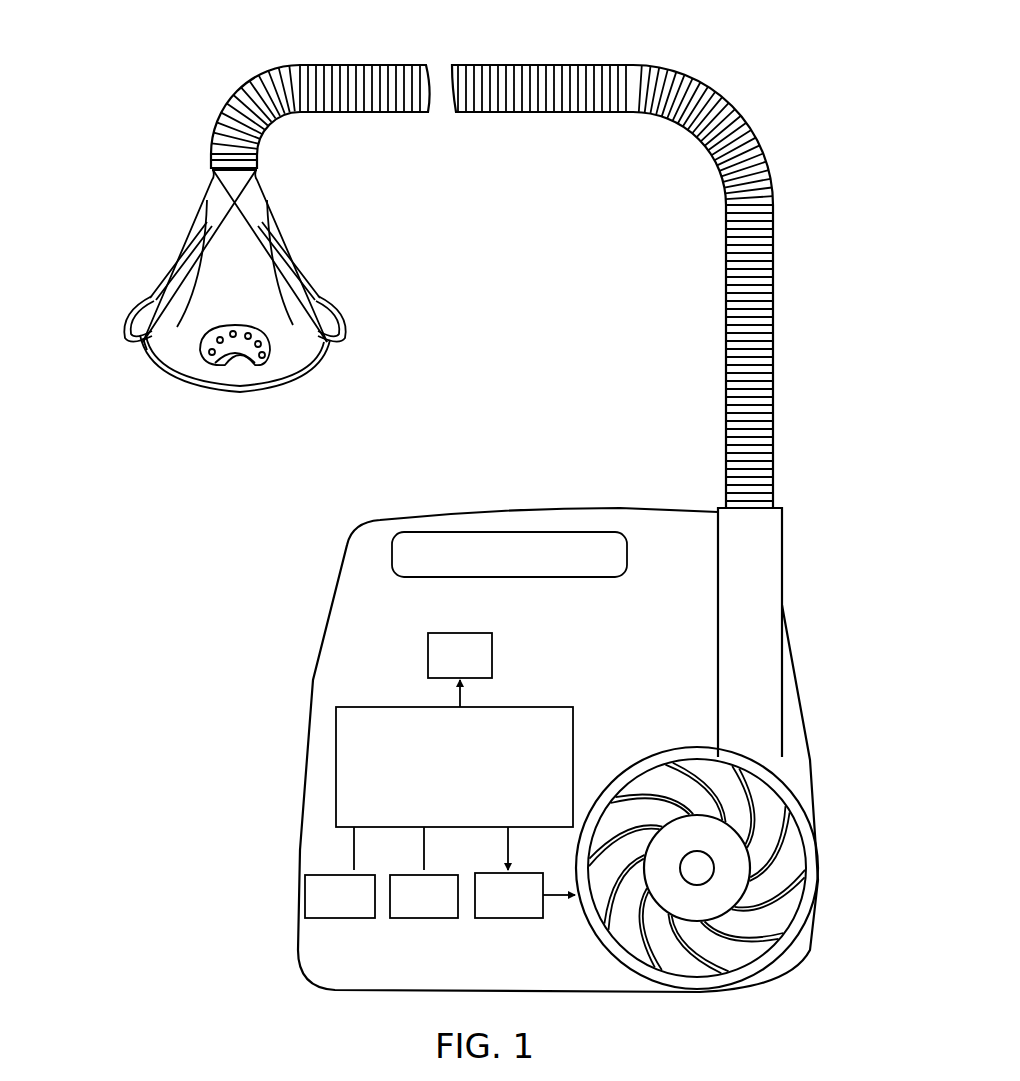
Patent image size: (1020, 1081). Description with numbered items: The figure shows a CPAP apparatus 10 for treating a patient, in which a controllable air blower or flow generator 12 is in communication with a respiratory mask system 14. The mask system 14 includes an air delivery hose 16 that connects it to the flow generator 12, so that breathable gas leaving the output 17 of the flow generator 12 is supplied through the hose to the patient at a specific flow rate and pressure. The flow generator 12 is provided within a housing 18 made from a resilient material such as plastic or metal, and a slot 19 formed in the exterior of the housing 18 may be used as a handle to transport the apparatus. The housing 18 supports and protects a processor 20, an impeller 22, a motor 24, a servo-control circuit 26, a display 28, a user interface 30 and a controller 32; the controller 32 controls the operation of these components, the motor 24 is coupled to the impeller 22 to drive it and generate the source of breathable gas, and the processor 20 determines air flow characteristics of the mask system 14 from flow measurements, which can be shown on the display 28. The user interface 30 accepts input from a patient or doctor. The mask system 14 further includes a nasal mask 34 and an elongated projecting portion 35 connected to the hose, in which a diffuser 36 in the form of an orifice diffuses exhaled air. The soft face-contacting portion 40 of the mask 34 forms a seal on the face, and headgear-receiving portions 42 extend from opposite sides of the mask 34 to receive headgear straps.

The CPAP apparatus 10 is at (305, 545).
The flow generator 12 is at (555, 750).
The respiratory mask system 14 is at (145, 245).
The air delivery hose 16 is at (600, 62).
The output 17 is at (760, 530).
The housing 18 is at (325, 615).
The slot 19 is at (490, 535).
The processor 20 is at (492, 660).
The impeller 22 is at (721, 885).
The motor 24 is at (738, 878).
The servo-control circuit 26 is at (520, 918).
The display 28 is at (420, 920).
The user interface 30 is at (340, 920).
The controller 32 is at (575, 745).
The mask 34 is at (175, 357).
The elongated projecting portion 35 is at (250, 210).
The diffuser 36 is at (240, 348).
The face-contacting portion 40 is at (330, 362).
The headgear-receiving portions 42 is at (128, 326).